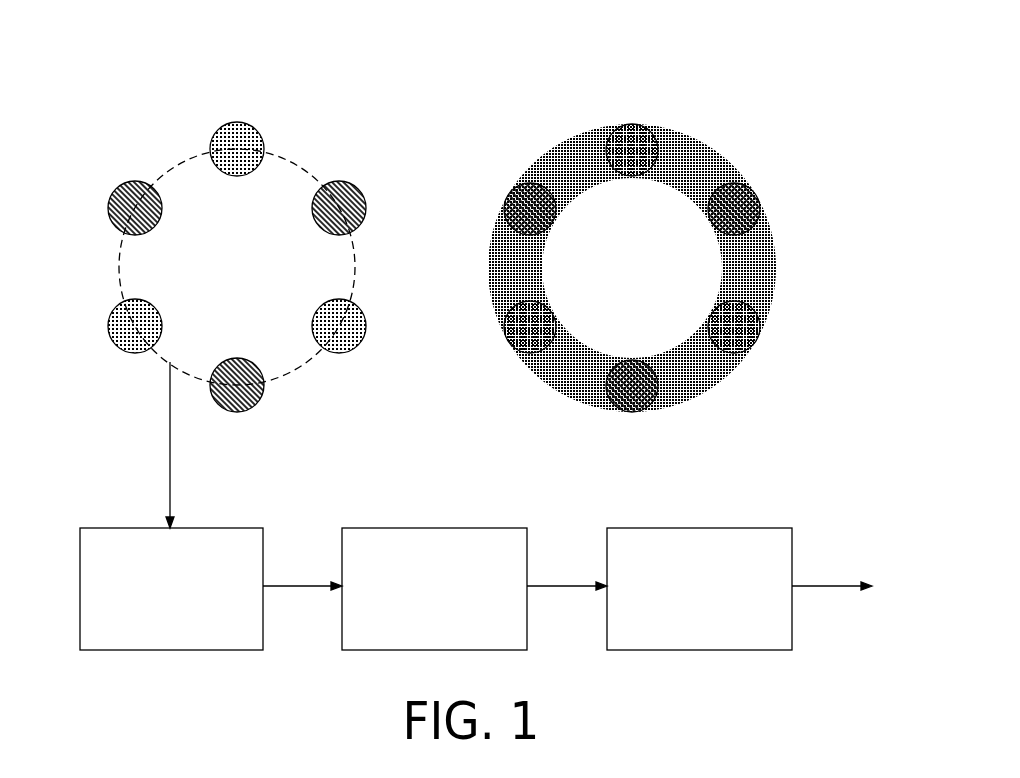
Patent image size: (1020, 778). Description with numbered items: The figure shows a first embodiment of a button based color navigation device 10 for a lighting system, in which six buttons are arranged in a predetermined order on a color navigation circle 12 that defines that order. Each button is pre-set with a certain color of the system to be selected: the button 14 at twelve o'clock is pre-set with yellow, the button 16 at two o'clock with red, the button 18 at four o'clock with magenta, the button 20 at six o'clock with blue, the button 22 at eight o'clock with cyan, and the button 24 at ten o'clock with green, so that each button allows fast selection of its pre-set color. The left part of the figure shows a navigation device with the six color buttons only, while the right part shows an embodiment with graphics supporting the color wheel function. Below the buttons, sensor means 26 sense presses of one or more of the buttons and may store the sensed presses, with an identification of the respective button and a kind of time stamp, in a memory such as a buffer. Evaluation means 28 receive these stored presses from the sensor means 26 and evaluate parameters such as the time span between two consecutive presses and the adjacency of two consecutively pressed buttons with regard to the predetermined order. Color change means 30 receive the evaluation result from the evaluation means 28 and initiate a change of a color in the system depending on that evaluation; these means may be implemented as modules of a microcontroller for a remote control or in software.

The color navigation device 10 is at (676, 212).
The color navigation circle 12 is at (693, 143).
The button 14 is at (237, 122).
The button 16 is at (342, 182).
The button 18 is at (366, 325).
The button 20 is at (250, 411).
The button 22 is at (110, 333).
The button 24 is at (133, 181).
The sensor means 26 is at (155, 599).
The evaluation means 28 is at (419, 599).
The color change means 30 is at (684, 599).